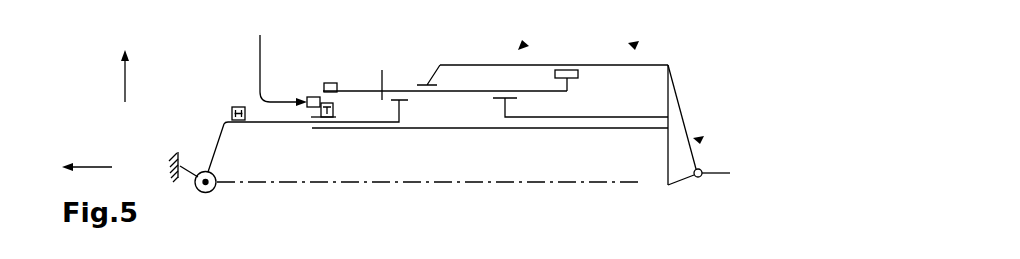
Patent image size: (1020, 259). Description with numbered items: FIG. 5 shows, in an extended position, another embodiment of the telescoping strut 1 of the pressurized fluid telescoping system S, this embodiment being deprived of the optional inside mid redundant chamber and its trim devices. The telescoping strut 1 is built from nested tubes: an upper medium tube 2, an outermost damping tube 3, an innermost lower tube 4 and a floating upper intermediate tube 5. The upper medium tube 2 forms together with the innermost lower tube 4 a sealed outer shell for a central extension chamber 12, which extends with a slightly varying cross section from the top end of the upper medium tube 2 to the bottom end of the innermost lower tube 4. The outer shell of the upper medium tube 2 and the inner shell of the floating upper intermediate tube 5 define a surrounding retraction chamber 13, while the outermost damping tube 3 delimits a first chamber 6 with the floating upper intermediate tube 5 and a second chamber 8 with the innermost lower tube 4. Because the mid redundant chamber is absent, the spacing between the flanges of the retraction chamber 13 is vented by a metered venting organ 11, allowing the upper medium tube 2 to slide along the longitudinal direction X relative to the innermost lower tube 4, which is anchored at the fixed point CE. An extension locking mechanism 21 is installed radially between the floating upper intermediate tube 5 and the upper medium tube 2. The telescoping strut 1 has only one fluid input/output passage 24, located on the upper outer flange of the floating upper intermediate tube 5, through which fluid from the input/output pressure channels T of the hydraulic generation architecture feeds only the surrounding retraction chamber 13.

The telescoping strut 1 is at (700, 140).
The upper medium tube 2 is at (220, 142).
The outermost damping tube 3 is at (465, 65).
The innermost lower tube 4 is at (470, 130).
The floating upper intermediate tube 5 is at (405, 90).
The first chamber 6 is at (498, 77).
The second chamber 8 is at (603, 80).
The metered venting organ 11 is at (642, 117).
The central extension chamber 12 is at (297, 167).
The surrounding retraction chamber 13 is at (382, 72).
The extension locking mechanism 21 is at (336, 108).
The fluid input/output passage 24 is at (316, 97).
The fixed bearing / wall CE is at (173, 153).
The input/output pressure channels T is at (260, 78).
The pressurized fluid telescoping system S is at (524, 44).
The longitudinal direction X is at (100, 165).